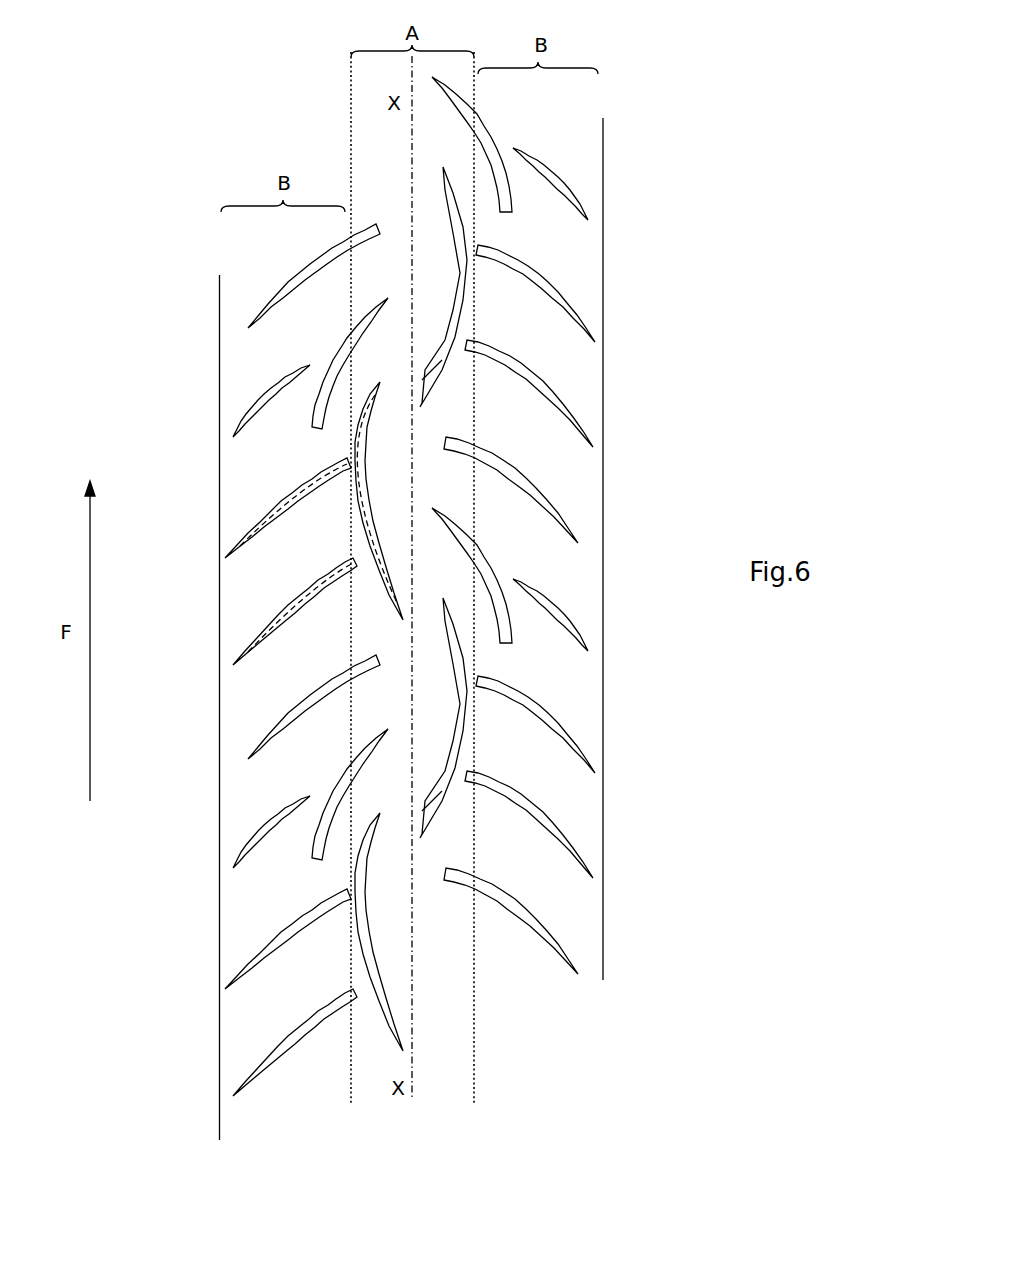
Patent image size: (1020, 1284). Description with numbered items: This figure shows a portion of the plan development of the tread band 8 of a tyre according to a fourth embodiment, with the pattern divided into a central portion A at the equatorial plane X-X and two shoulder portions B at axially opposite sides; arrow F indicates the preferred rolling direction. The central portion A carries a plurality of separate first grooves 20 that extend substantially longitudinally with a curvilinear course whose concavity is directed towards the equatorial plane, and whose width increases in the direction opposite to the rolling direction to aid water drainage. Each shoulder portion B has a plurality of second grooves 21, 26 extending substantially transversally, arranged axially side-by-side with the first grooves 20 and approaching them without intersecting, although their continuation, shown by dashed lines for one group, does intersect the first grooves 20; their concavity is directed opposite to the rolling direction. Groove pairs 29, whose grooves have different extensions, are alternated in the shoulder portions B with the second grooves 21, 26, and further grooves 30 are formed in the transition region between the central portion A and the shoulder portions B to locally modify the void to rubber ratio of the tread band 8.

The tread band 8 is at (712, 156).
The first grooves 20 is at (411, 609).
The second grooves 21 is at (242, 765).
The second grooves 26 is at (567, 561).
The groove pairs 29 is at (397, 558).
The grooves 30 is at (416, 468).